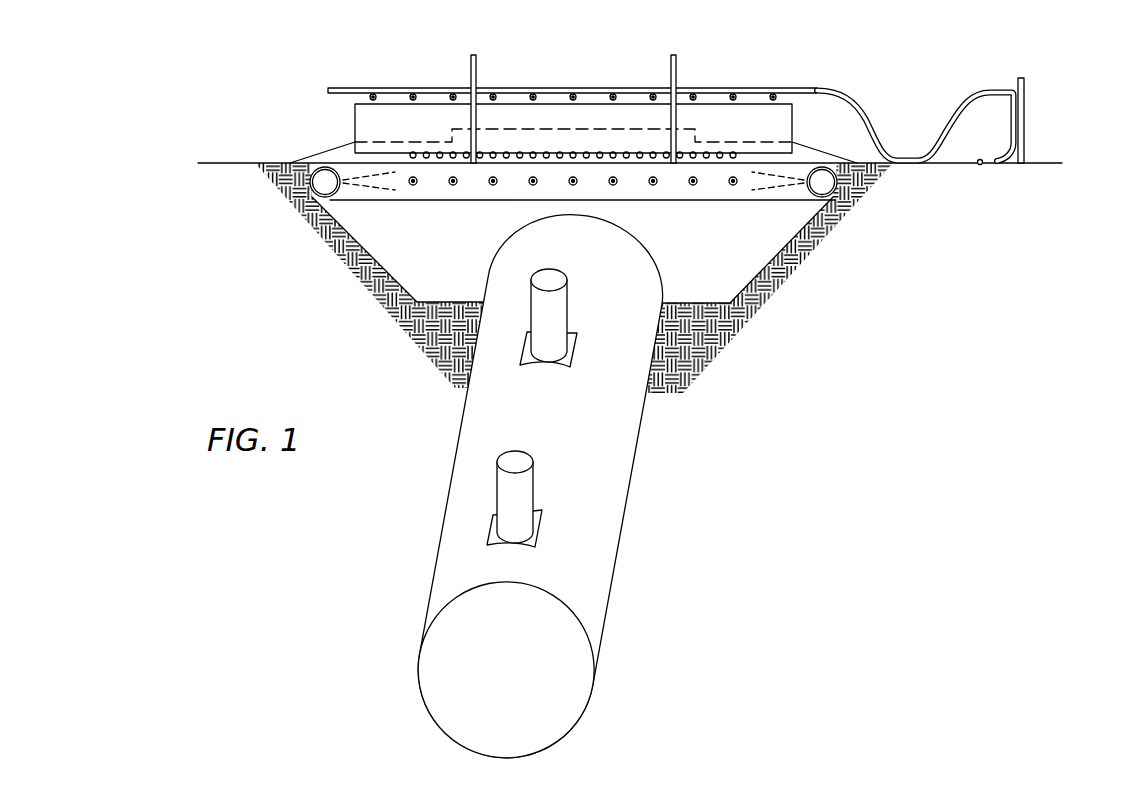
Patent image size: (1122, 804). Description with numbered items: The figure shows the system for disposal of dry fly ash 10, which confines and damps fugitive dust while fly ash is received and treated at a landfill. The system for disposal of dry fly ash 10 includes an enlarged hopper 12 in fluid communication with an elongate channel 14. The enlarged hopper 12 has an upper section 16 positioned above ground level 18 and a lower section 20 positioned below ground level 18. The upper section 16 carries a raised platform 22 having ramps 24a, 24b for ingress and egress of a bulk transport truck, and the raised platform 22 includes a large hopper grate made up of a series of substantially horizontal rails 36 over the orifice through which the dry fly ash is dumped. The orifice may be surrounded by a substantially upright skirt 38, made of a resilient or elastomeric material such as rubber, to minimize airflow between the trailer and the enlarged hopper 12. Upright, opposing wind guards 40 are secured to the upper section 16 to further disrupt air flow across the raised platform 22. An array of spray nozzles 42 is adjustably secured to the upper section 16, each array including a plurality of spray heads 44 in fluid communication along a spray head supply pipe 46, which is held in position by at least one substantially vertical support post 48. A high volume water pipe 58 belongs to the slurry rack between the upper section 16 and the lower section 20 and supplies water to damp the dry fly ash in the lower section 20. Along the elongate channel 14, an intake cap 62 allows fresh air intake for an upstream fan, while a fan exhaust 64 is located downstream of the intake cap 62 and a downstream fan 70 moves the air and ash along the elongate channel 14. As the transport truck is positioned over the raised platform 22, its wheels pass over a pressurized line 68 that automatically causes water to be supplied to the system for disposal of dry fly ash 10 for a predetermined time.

The system for disposal of dry fly ash 10 is at (187, 323).
The enlarged hopper 12 is at (280, 74).
The elongate channel 14 is at (613, 477).
The upper section 16 is at (912, 57).
The ground level 18 is at (1045, 163).
The lower section 20 is at (745, 257).
The raised platform 22 is at (740, 142).
The ramp 24a is at (330, 157).
The ramp 24b is at (817, 157).
The substantially horizontal rails 36 is at (600, 152).
The substantially upright skirt 38 is at (505, 128).
The wind guards 40 is at (795, 120).
The array of spray nozzles 42 is at (376, 92).
The spray heads 44 is at (413, 92).
The spray head supply pipe 46 is at (343, 88).
The substantially vertical support post 48 is at (471, 62).
The high volume water pipe 58 is at (322, 183).
The intake cap 62 is at (540, 310).
The fan exhaust 64 is at (512, 485).
The pressurized line 68 is at (981, 166).
The downstream fan 70 is at (445, 670).